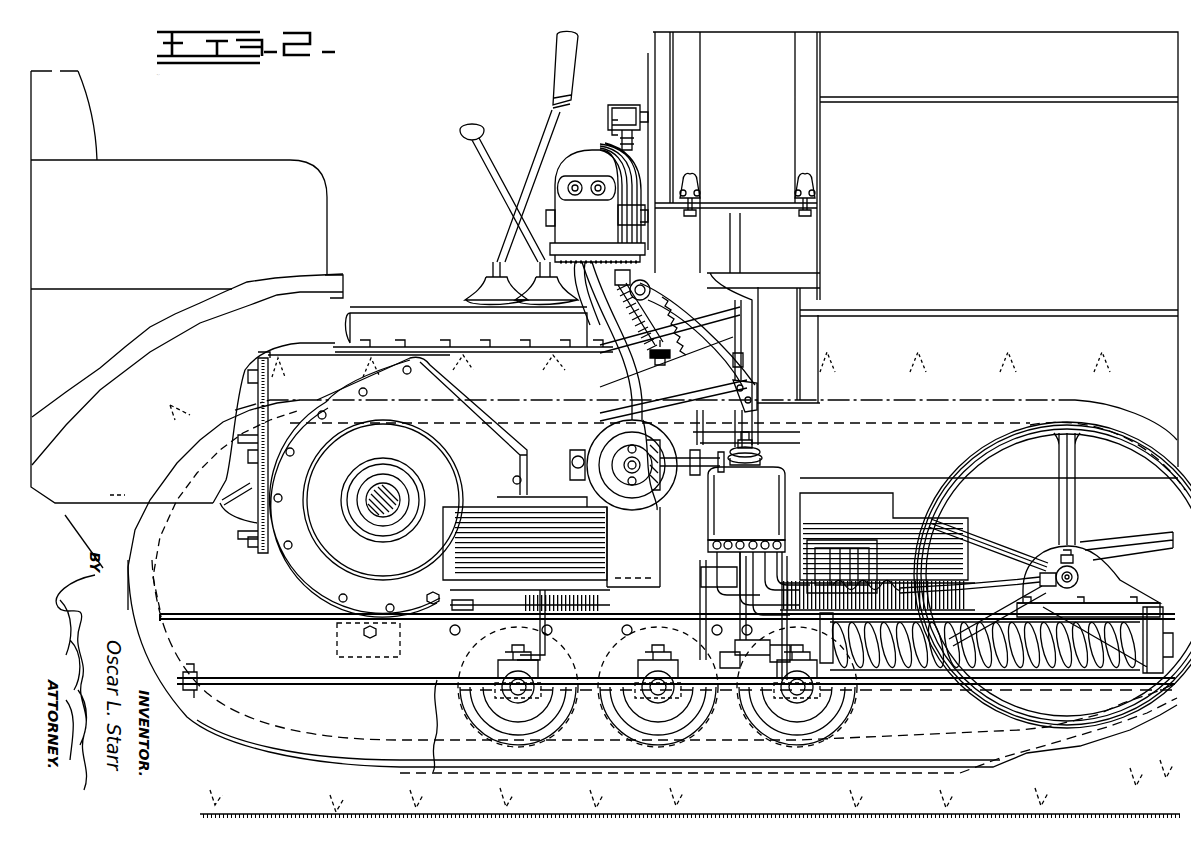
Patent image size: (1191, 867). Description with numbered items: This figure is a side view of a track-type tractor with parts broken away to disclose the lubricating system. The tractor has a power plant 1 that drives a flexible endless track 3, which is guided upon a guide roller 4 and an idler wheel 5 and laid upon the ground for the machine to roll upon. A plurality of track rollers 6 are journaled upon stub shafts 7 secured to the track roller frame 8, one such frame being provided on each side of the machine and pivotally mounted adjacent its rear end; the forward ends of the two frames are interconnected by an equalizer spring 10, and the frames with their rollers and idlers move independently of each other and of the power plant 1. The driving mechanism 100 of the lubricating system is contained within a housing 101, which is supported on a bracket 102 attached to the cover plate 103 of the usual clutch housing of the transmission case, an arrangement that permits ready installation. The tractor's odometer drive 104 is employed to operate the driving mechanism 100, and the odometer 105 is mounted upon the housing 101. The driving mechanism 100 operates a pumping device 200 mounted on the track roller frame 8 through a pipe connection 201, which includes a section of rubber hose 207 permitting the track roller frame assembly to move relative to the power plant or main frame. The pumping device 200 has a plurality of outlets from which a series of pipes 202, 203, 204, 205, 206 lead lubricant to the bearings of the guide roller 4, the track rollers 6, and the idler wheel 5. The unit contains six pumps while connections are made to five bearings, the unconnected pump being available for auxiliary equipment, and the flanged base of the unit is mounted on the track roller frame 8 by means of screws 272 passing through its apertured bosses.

The power plant 1 is at (1016, 187).
The flexible endless track 3 is at (303, 801).
The guide roller 4 is at (635, 57).
The idler wheel 5 is at (1079, 507).
The track rollers 6 is at (610, 711).
The stub shafts 7 is at (790, 693).
The track roller frame 8 is at (257, 663).
The equalizer spring 10 is at (845, 558).
The driving mechanism 100 is at (597, 152).
The housing 101 is at (574, 168).
The bracket 102 is at (640, 270).
The cover plate 103 is at (700, 303).
The odometer drive 104 is at (660, 352).
The odometer 105 is at (632, 107).
The pumping device 200 is at (818, 452).
The pipe connection 201 is at (628, 366).
The pipe 202 is at (703, 485).
The pipe 203 is at (608, 585).
The pipe 204 is at (705, 628).
The pipe 205 is at (768, 538).
The pipe 206 is at (976, 582).
The rubber hose 207 is at (726, 458).
The screws 272 is at (719, 577).